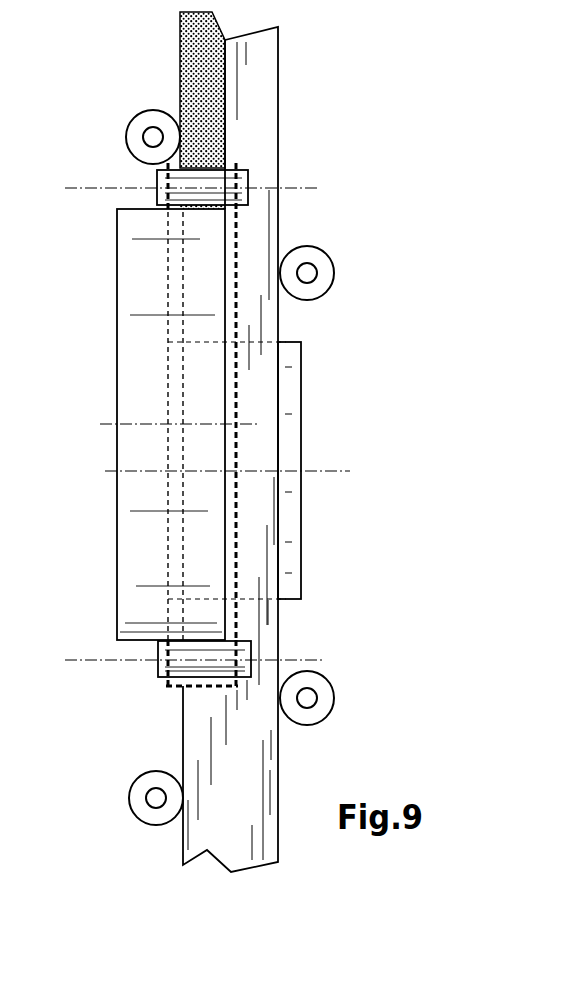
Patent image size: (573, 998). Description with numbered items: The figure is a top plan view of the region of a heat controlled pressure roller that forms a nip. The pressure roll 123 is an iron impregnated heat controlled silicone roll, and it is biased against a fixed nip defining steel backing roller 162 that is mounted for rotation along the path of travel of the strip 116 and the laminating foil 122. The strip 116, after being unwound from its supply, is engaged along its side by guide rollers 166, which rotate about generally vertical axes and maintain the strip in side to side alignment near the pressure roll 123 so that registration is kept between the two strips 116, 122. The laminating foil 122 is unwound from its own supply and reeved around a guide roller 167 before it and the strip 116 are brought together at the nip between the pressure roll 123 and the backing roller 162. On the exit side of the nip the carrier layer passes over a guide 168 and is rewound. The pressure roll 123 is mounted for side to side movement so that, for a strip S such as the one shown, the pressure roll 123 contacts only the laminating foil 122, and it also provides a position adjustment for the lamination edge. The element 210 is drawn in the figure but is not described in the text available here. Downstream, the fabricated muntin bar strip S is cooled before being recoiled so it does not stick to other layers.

The strip S is at (255, 77).
The abrasive layer 210 is at (240, 162).
The guide 168 is at (248, 173).
The guide rollers 166 is at (133, 138).
The steel backing roller 162 is at (289, 433).
The pressure roll 123 is at (137, 383).
The guide roller 167 is at (249, 653).
The laminating foil 122 is at (177, 686).
The strip 116 is at (250, 773).